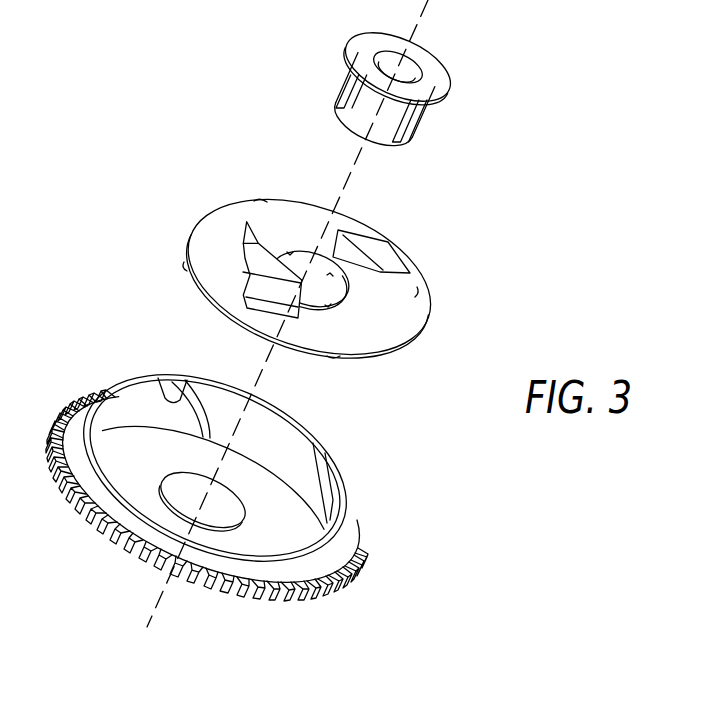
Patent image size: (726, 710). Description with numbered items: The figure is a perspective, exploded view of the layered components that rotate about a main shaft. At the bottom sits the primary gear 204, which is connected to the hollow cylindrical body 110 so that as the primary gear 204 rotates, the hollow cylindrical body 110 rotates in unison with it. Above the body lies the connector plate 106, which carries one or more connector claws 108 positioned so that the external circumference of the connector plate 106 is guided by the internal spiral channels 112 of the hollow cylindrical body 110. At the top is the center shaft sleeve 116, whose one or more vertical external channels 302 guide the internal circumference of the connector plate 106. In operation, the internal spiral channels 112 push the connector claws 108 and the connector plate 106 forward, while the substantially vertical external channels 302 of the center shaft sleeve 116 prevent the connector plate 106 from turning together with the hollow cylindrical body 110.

The connector plate 106 is at (378, 332).
The connector claws 108 is at (243, 258).
The hollow cylindrical body 110 is at (258, 497).
The internal spiral channels 112 is at (158, 378).
The center shaft sleeve 116 is at (362, 128).
The primary gear 204 is at (277, 593).
The vertical external channels 302 is at (350, 92).